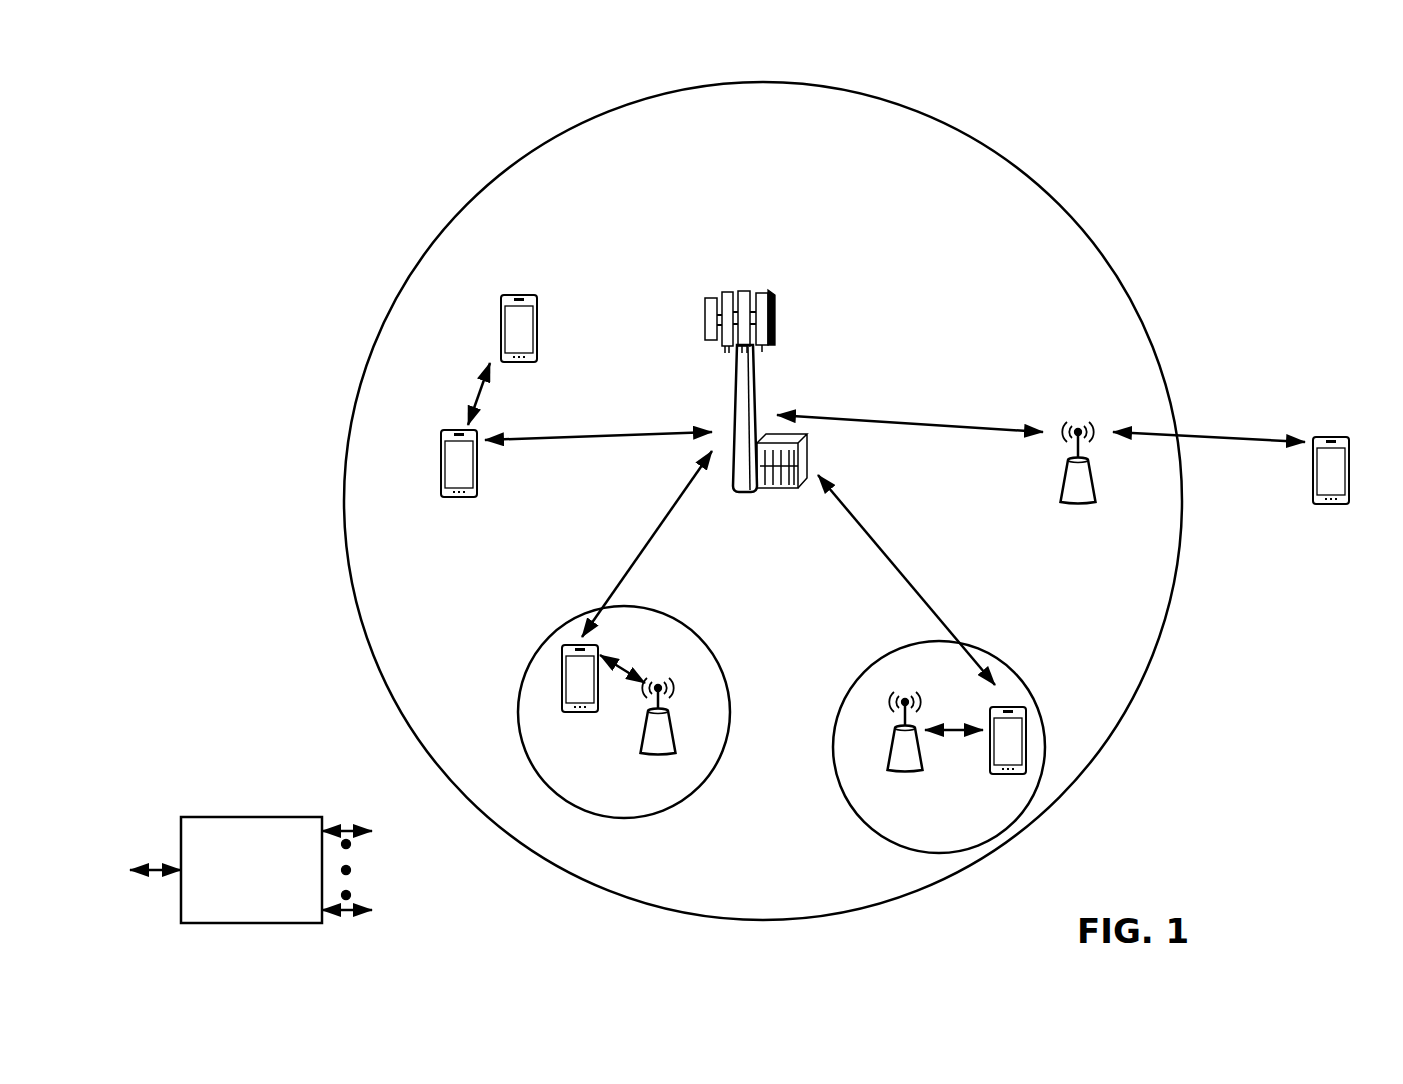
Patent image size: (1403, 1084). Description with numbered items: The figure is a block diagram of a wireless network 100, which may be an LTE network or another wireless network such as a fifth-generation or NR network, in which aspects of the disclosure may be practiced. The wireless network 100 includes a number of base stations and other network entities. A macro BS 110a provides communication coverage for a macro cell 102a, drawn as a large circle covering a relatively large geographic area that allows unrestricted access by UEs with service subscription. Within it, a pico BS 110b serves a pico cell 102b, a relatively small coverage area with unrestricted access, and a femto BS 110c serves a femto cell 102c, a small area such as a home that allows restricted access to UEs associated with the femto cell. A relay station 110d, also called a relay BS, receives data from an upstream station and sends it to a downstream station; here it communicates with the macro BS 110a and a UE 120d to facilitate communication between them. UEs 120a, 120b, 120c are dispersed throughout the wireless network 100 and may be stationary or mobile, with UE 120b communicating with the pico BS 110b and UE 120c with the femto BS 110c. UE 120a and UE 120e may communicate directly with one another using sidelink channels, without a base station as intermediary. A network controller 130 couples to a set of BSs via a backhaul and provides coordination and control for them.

The wireless network 100 is at (235, 79).
The macro cell 102a is at (1043, 190).
The pico cell 102b is at (712, 650).
The femto cell 102c is at (877, 660).
The macro BS 110a is at (752, 282).
The pico BS 110b is at (683, 742).
The femto BS 110c is at (887, 760).
The relay station 110d is at (1078, 420).
The UE 120a is at (440, 460).
The UE 120b is at (568, 713).
The UE 120c is at (992, 773).
The UE 120d is at (1345, 430).
The UE 120e is at (500, 314).
The network controller 130 is at (251, 813).